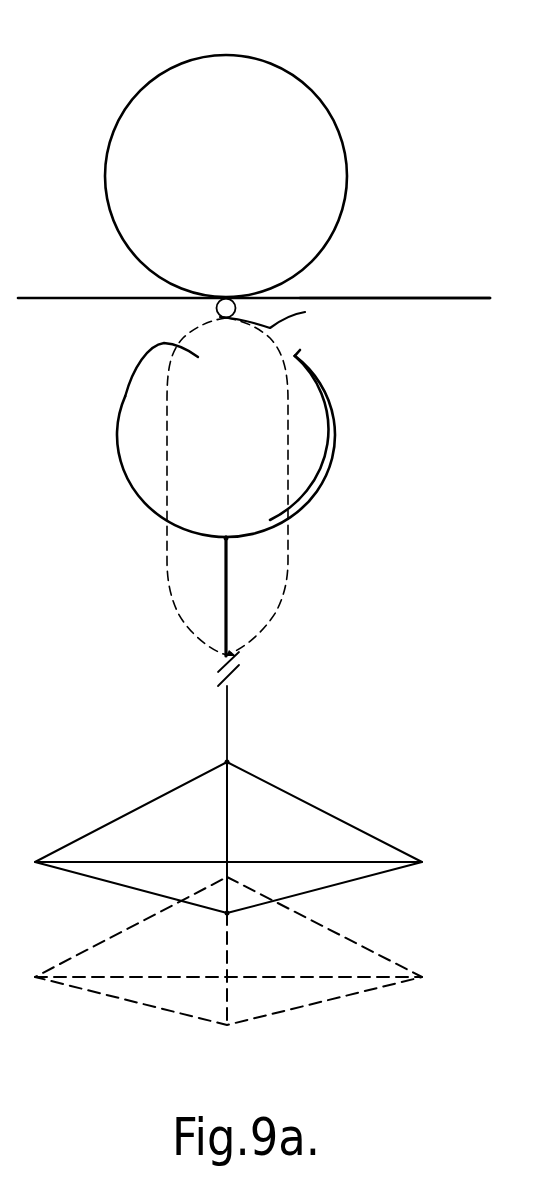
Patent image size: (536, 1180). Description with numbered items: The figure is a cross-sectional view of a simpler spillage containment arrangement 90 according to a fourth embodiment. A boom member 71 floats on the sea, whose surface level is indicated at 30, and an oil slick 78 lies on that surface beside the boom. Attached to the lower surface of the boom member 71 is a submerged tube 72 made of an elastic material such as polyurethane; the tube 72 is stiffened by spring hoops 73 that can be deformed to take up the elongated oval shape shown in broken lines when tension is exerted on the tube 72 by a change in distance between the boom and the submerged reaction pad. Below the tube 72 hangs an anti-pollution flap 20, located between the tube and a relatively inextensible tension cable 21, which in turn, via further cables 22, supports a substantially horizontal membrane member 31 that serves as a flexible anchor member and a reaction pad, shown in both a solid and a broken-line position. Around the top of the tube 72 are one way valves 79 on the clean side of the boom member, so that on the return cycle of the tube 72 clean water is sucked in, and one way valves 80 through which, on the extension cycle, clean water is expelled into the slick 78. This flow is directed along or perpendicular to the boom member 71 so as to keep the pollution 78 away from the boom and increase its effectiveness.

The containment arrangement 90 is at (342, 82).
The boom member 71 is at (347, 160).
The slick 78 is at (427, 297).
The sea level 30 is at (78, 297).
The one way valves 79 is at (181, 337).
The one way valves 80 is at (287, 342).
The submerged tube 72 is at (335, 433).
The spring hoops 73 is at (308, 499).
The flap 20 is at (225, 580).
The tension cable 21 is at (227, 730).
The further cables 22 is at (322, 807).
The membrane member 31 is at (267, 861).